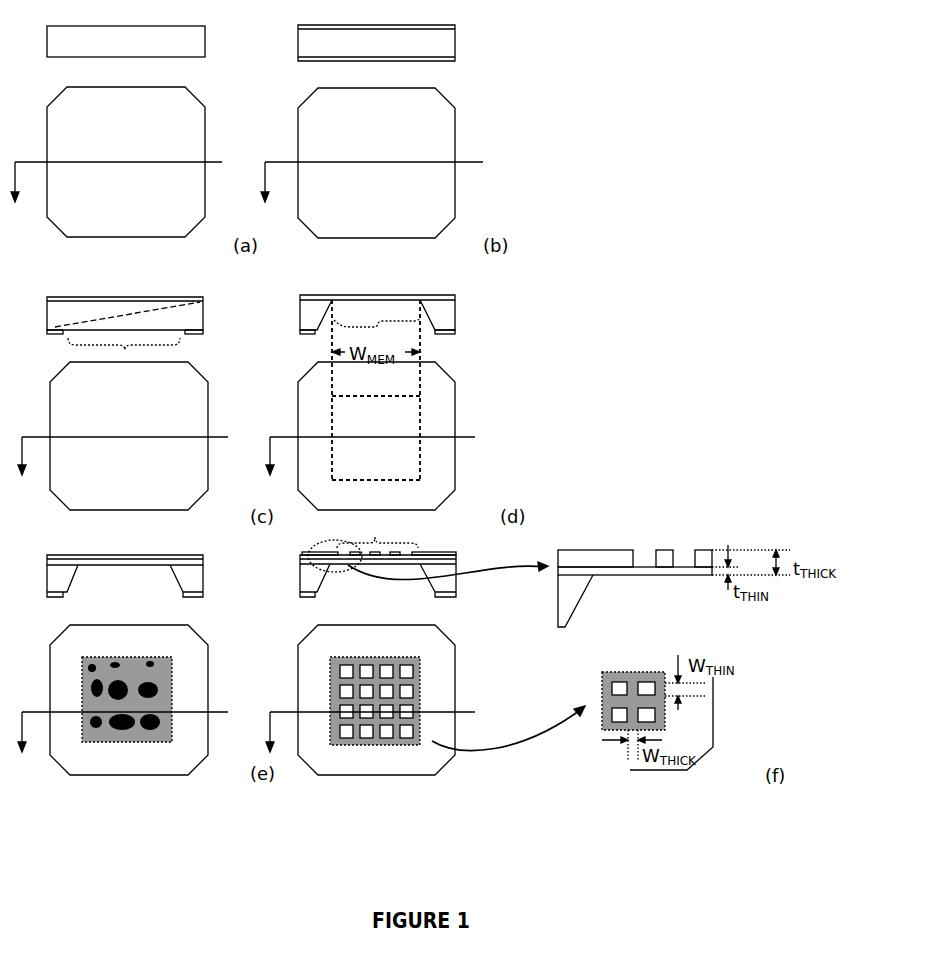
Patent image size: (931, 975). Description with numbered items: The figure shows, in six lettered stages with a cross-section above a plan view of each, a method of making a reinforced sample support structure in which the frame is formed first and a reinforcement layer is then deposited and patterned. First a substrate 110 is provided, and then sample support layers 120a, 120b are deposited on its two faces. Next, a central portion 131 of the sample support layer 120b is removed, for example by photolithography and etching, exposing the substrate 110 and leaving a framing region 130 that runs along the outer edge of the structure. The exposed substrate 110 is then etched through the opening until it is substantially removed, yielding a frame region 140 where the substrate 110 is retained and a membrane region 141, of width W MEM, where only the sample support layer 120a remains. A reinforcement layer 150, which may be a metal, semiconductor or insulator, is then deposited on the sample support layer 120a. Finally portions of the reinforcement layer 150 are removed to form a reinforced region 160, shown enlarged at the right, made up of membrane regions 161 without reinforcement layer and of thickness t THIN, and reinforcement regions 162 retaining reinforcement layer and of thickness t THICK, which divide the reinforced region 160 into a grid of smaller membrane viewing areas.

The substrate 110 is at (197, 47).
The sample support layer 120a is at (455, 25).
The sample support layer 120b is at (455, 60).
The framing region 130 is at (195, 325).
The central portion 131 is at (125, 350).
The frame region 140 is at (445, 313).
The membrane region 141 is at (380, 329).
The reinforcement layer 150 is at (205, 558).
The reinforced region 160 is at (377, 534).
The membrane region 161 is at (417, 672).
The reinforcement region 162 is at (423, 698).